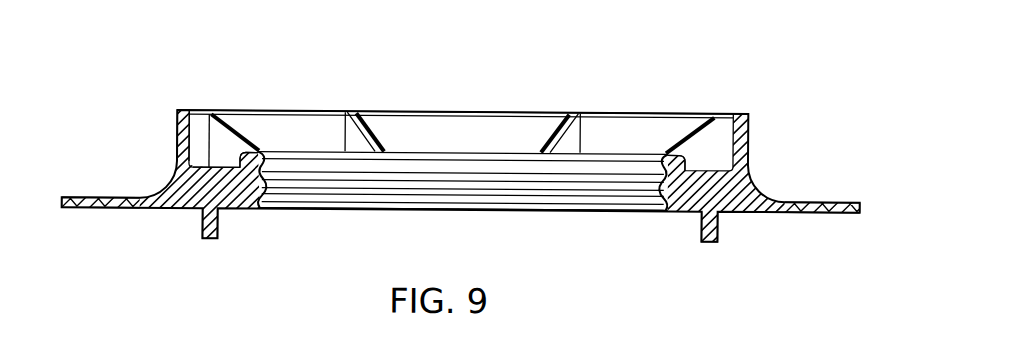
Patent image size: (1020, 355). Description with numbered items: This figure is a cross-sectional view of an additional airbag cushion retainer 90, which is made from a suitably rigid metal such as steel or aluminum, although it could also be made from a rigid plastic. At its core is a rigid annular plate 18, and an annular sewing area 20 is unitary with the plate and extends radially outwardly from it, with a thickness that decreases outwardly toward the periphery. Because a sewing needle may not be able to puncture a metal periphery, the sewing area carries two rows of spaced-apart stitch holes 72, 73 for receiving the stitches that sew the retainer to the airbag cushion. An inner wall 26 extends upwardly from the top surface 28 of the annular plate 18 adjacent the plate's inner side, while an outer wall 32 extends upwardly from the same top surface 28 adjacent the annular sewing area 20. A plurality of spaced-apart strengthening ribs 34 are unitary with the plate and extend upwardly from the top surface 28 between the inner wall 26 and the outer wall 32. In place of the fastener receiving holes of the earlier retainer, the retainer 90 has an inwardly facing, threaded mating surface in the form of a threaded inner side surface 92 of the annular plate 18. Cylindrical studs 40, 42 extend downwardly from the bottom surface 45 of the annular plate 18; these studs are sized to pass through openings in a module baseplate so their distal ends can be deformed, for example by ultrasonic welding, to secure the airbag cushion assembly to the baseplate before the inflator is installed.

The airbag cushion retainer 90 is at (566, 63).
The annular sewing area 20 is at (758, 198).
The outer wall 32 is at (177, 111).
The annular plate 18 is at (204, 166).
The top surface 28 is at (216, 168).
The strengthening ribs 34 is at (244, 137).
The inner wall 26 is at (258, 153).
The threaded inner side surface 92 is at (620, 179).
The bottom surface 45 is at (534, 211).
The stitch holes 72 is at (122, 200).
The stitch holes 73 is at (80, 210).
The cylindrical stud 42 is at (201, 225).
The cylindrical stud 40 is at (719, 228).